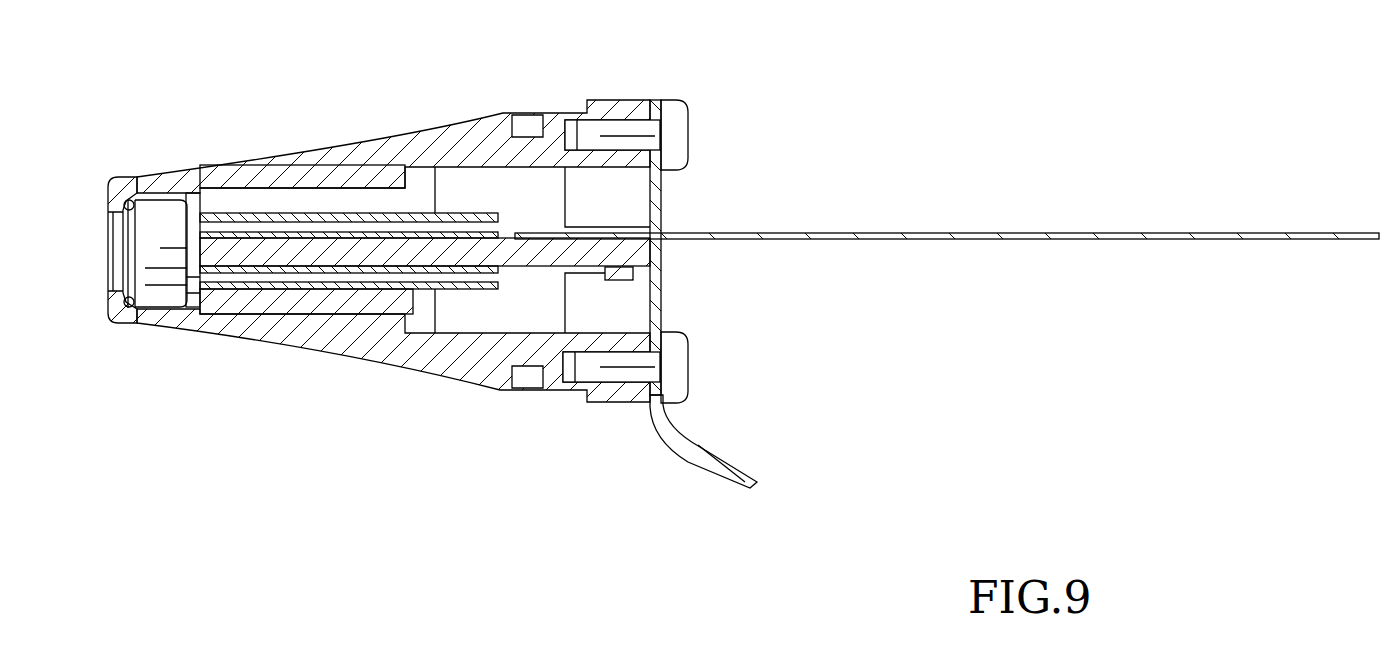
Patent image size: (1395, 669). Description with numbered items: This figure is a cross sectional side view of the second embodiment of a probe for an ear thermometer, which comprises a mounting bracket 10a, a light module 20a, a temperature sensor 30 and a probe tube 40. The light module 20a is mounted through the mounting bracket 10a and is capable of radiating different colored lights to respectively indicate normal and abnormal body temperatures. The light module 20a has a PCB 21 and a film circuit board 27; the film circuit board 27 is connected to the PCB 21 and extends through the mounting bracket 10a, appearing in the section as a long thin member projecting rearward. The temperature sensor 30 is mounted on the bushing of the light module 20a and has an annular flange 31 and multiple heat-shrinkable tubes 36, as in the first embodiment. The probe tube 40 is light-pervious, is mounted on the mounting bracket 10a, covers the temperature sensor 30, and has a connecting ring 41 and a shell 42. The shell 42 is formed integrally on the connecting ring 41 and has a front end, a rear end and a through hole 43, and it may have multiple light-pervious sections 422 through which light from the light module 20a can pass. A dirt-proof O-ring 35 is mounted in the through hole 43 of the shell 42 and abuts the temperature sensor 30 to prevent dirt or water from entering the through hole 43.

The mounting bracket 10a is at (677, 202).
The light module 20a is at (433, 237).
The PCB 21 is at (305, 247).
The film circuit board 27 is at (962, 236).
The temperature sensor 30 is at (123, 248).
The annular flange 31 is at (192, 307).
The dirt-proof O-ring 35 is at (130, 178).
The heat-shrinkable tubes 36 is at (383, 212).
The probe tube 40 is at (643, 80).
The connecting ring 41 is at (603, 100).
The shell 42 is at (252, 175).
The light-pervious sections 422 is at (187, 178).
The through hole 43 is at (470, 323).